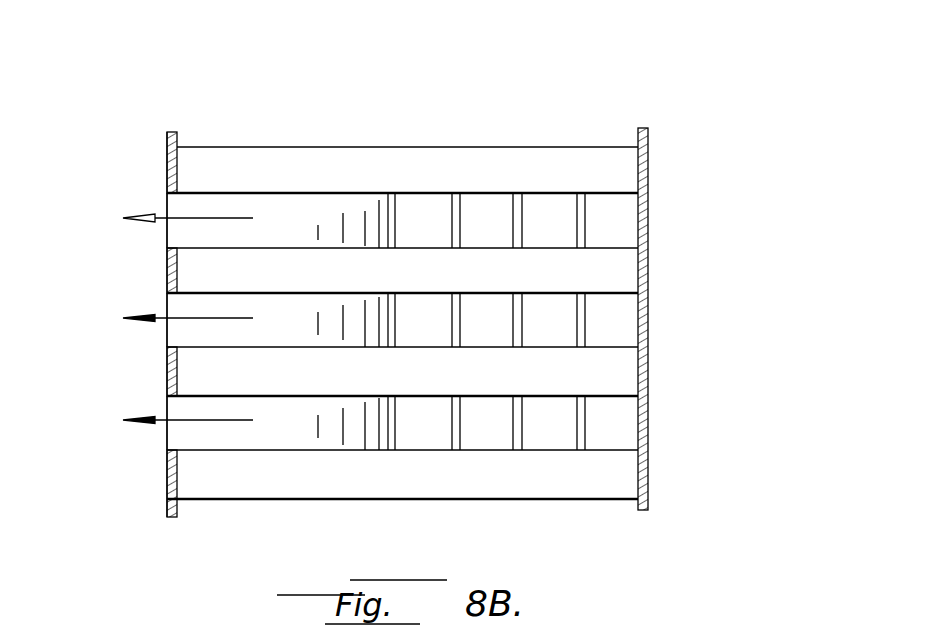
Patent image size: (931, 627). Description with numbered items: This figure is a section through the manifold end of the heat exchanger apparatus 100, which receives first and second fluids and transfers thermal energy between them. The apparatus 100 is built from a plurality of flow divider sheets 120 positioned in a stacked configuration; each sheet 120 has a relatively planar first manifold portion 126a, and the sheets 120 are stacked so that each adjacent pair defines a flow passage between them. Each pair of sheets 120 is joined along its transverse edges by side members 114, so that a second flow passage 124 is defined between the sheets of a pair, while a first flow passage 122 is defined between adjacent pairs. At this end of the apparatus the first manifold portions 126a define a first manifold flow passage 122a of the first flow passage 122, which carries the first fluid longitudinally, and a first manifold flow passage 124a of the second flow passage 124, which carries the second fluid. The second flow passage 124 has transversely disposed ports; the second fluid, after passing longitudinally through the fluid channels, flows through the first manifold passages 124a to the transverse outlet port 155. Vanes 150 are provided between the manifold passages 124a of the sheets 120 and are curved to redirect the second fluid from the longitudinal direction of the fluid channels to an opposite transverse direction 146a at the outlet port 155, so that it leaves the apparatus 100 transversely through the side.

The heat exchanger apparatus 100 is at (362, 112).
The side members 114 is at (652, 217).
The flow divider sheets 120 is at (238, 193).
The first flow passage 122 is at (499, 282).
The first manifold flow passage 122a is at (557, 157).
The second flow passage 124 is at (402, 300).
The first manifold flow passage 124a is at (290, 212).
The first manifold portion 126a is at (438, 140).
The opposite transverse direction 146a is at (165, 216).
The vanes 150 is at (530, 218).
The transverse outlet port 155 is at (158, 241).